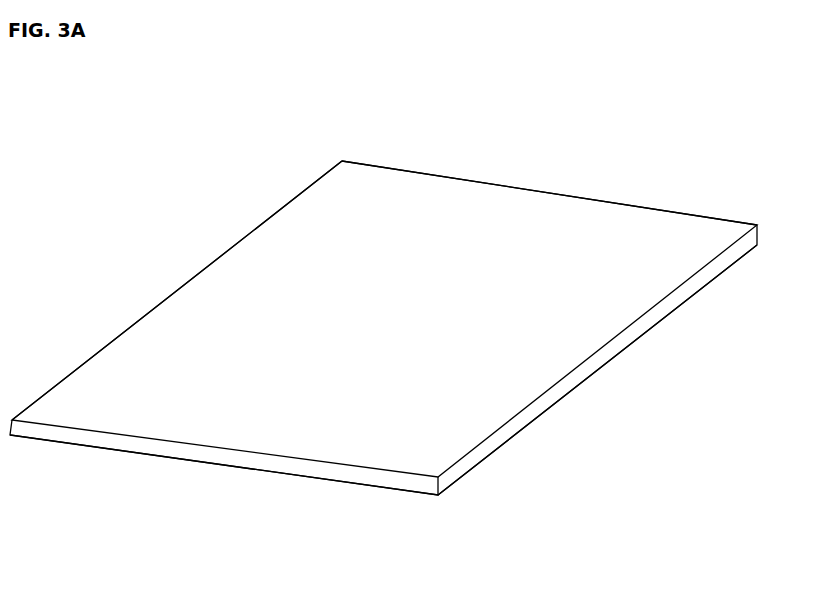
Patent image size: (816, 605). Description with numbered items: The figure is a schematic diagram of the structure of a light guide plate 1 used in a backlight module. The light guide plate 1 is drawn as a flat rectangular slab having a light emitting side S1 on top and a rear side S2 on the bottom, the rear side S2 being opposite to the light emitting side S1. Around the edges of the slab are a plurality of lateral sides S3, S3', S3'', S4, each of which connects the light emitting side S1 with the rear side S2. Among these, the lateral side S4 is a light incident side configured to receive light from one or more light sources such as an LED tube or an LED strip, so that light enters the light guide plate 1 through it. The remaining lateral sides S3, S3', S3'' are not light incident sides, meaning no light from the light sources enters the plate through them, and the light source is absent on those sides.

The light guide plate 1 is at (387, 343).
The light emitting side S1 is at (419, 250).
The rear side S2 is at (421, 411).
The lateral side S3 is at (224, 499).
The lateral side S3' is at (601, 360).
The lateral side S3'' is at (549, 193).
The lateral side S4 is at (152, 303).